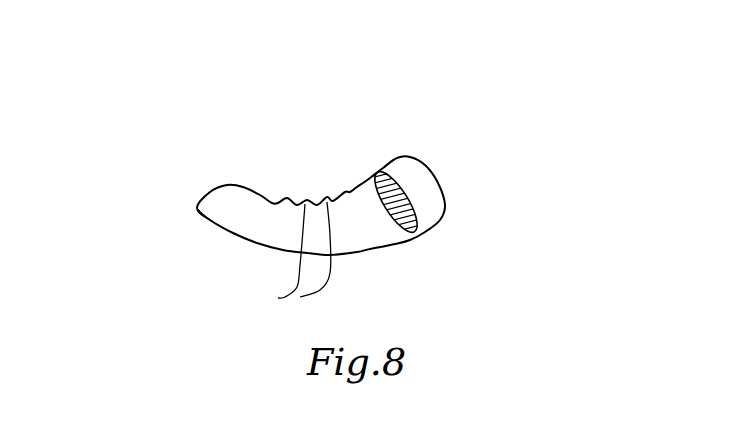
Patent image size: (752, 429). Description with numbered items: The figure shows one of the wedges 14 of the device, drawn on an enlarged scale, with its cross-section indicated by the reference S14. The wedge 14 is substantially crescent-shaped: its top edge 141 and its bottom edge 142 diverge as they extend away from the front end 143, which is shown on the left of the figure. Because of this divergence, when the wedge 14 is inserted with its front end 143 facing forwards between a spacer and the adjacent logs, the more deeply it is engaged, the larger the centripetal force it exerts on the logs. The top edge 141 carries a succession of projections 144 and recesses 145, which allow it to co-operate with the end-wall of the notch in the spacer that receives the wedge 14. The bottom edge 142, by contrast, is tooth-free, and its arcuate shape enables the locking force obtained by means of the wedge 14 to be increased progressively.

The wedge 14 is at (406, 171).
The cross-section of the wedge S14 is at (398, 170).
The top edge 141 is at (218, 178).
The bottom edge 142 is at (229, 241).
The front end 143 is at (215, 207).
The projections 144 is at (300, 297).
The recesses 145 is at (312, 190).